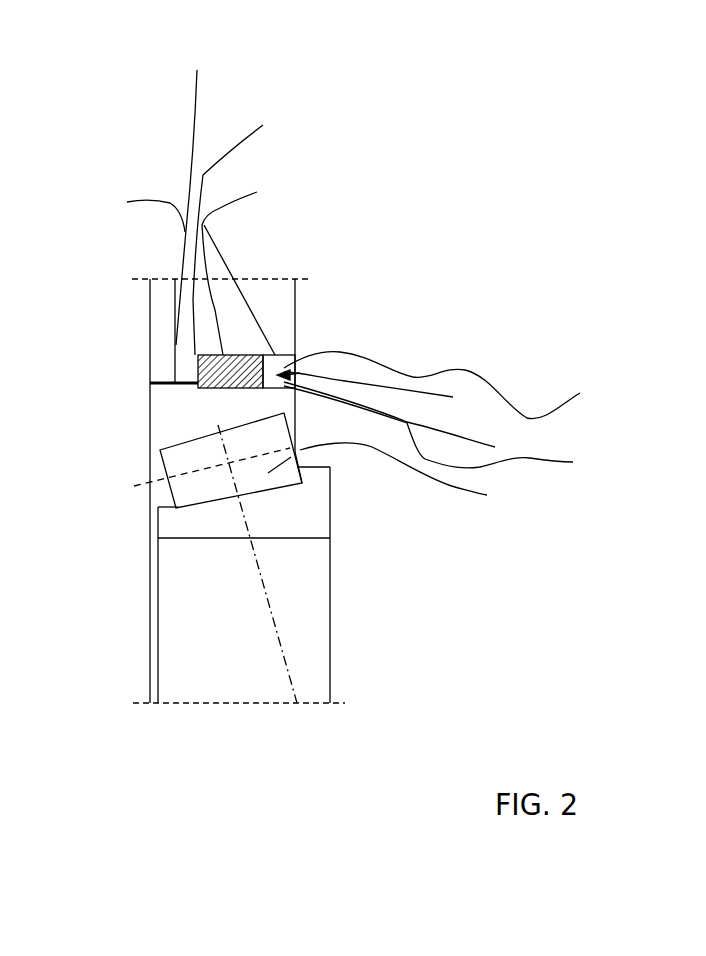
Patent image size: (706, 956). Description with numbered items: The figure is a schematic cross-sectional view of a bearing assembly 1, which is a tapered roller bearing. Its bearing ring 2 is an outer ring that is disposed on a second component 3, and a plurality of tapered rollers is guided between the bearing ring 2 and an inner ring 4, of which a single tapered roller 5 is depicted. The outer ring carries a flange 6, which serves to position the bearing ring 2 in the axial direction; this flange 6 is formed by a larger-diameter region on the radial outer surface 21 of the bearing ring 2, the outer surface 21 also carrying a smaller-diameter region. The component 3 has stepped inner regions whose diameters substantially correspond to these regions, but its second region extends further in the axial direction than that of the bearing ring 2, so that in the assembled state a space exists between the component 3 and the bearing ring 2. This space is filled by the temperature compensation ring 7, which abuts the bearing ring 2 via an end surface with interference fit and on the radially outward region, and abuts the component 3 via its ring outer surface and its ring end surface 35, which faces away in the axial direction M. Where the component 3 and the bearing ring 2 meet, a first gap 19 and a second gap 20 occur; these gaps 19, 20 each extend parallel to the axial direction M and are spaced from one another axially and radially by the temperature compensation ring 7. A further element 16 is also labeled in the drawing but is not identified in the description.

The bearing assembly 1 is at (326, 297).
The bearing ring 2 is at (381, 394).
The second component 3 is at (260, 302).
The inner ring 4 is at (308, 520).
The tapered roller 5 is at (406, 487).
The flange 6 is at (446, 433).
The temperature compensation ring 7 is at (402, 419).
The carrier 16 is at (0, 593).
The first gap 19 is at (136, 209).
The second gap 20 is at (251, 270).
The radial outer surface 21 is at (188, 394).
The ring end surface 35 is at (198, 181).